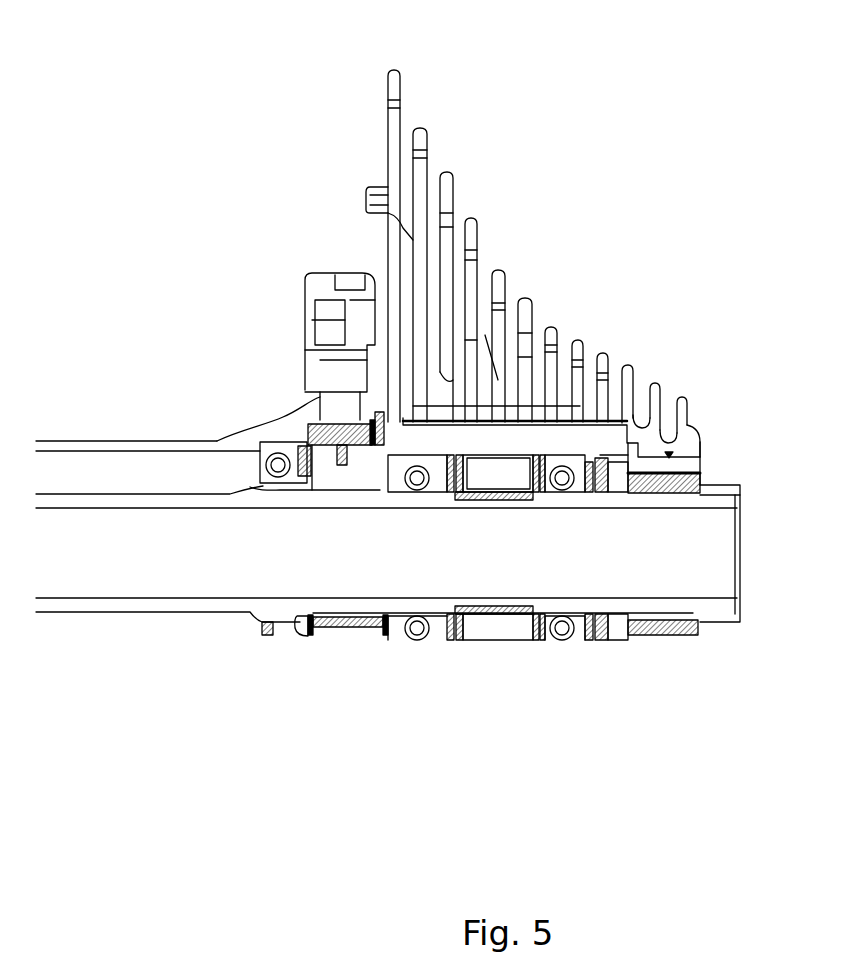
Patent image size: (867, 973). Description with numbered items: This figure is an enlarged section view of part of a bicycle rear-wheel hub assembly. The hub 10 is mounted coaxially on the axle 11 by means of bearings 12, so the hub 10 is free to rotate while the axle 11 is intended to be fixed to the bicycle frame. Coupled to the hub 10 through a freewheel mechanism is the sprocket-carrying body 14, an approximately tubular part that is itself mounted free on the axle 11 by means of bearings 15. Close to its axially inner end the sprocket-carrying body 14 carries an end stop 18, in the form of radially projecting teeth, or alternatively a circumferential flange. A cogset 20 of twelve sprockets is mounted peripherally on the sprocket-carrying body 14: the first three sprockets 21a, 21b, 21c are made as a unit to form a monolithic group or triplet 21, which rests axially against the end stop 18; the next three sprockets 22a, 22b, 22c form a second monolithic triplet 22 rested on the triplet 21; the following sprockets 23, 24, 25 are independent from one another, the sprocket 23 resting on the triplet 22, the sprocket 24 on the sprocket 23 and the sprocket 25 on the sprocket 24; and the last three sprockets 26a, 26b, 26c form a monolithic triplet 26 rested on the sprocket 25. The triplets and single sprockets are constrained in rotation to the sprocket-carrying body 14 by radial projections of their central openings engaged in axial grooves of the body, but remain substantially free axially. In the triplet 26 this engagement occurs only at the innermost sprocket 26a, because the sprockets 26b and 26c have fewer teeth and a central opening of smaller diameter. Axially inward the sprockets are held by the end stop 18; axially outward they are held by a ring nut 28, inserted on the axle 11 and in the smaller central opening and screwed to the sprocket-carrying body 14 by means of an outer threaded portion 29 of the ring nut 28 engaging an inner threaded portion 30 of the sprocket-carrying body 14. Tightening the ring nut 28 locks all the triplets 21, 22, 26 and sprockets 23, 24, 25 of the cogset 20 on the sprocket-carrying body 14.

The hub 10 is at (60, 443).
The axle 11 is at (140, 578).
The bearings 12 is at (260, 463).
The sprocket-carrying body 14 is at (400, 443).
The bearings 15 is at (405, 485).
The end stop 18 is at (300, 367).
The cogset 20 is at (612, 164).
The monolithic group (triplet) 21 is at (405, 62).
The sprocket 21a is at (387, 124).
The sprocket 21b is at (413, 165).
The sprocket 21c is at (440, 197).
The monolithic group (triplet) 22 is at (477, 205).
The sprocket 22a is at (465, 245).
The sprocket 22b is at (518, 350).
The sprocket 22c is at (492, 332).
The sprocket 23 is at (553, 328).
The sprocket 24 is at (583, 348).
The sprocket 25 is at (608, 355).
The monolithic group (triplet) 26 is at (702, 387).
The sprocket 26a is at (665, 412).
The sprocket 26b is at (680, 428).
The sprocket 26c is at (700, 443).
The ring nut 28 is at (685, 490).
The outer threaded portion 29 is at (638, 478).
The inner threaded portion 30 is at (614, 475).